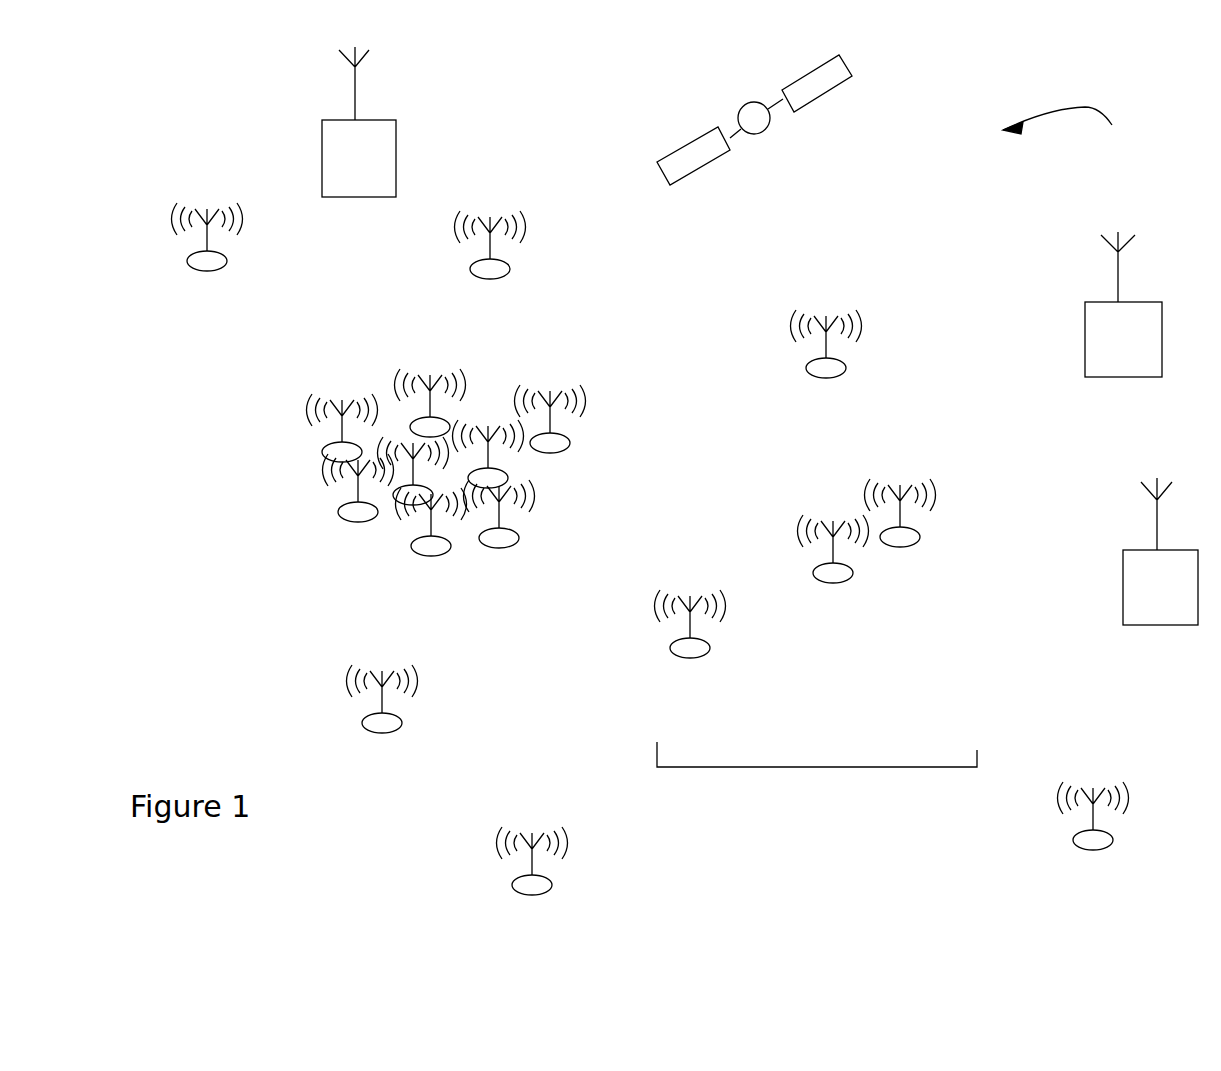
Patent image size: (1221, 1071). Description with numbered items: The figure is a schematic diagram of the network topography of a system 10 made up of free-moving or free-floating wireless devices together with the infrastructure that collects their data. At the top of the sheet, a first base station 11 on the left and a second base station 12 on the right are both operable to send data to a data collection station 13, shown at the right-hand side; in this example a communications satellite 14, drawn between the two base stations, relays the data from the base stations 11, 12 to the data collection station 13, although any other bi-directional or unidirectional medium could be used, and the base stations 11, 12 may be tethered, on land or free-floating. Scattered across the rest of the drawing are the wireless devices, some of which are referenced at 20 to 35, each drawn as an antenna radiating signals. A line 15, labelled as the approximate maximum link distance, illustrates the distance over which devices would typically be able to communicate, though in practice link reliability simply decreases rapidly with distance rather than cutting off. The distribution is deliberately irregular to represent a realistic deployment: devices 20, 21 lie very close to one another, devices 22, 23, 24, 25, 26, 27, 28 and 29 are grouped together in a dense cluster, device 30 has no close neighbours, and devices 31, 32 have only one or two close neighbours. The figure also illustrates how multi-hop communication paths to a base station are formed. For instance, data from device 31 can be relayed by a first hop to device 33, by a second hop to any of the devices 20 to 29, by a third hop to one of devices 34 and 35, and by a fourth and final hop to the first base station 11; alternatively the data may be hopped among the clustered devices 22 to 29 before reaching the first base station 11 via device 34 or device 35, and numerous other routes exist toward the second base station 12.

The system 10 is at (1076, 124).
The first base station 11 is at (396, 175).
The second base station 12 is at (1085, 352).
The data collection station 13 is at (1123, 607).
The communications satellite 14 is at (762, 130).
The line 15 is at (760, 767).
The wireless device 20 is at (840, 583).
The wireless device 21 is at (907, 547).
The wireless device 22 is at (327, 453).
The wireless device 23 is at (450, 423).
The wireless device 24 is at (560, 433).
The wireless device 25 is at (507, 473).
The wireless device 26 is at (519, 537).
The wireless device 27 is at (445, 555).
The wireless device 28 is at (398, 507).
The wireless device 29 is at (355, 522).
The wireless device 30 is at (1090, 850).
The wireless device 31 is at (552, 885).
The wireless device 32 is at (828, 378).
The wireless device 33 is at (400, 730).
The wireless device 34 is at (195, 271).
The wireless device 35 is at (507, 275).